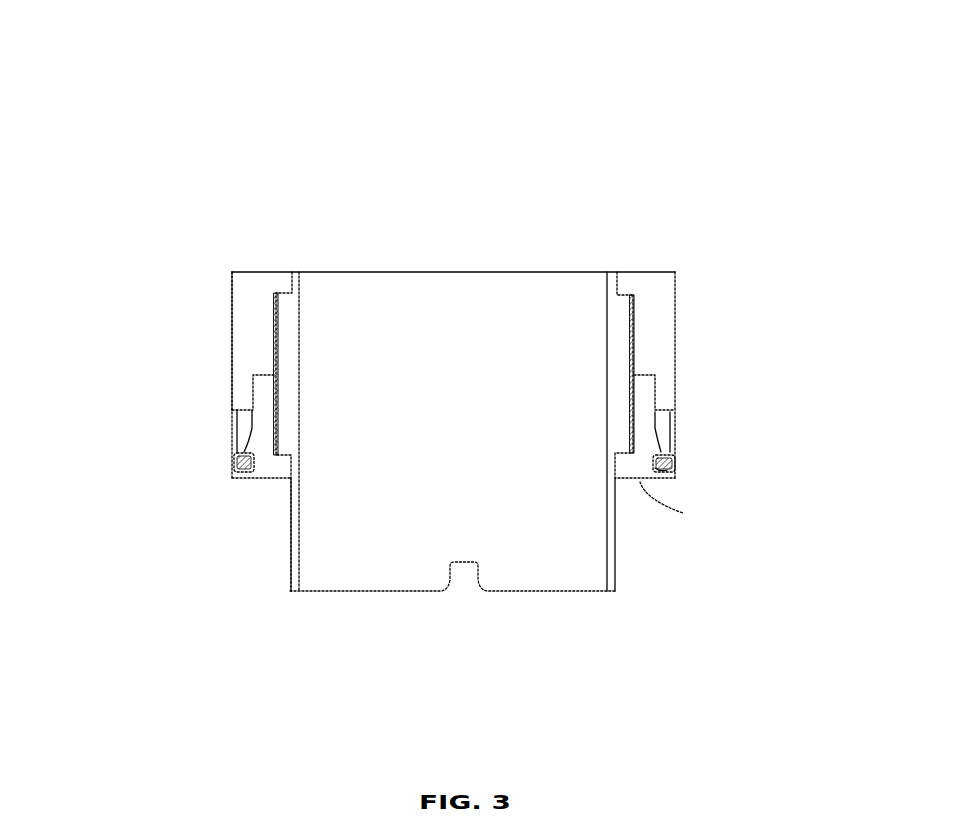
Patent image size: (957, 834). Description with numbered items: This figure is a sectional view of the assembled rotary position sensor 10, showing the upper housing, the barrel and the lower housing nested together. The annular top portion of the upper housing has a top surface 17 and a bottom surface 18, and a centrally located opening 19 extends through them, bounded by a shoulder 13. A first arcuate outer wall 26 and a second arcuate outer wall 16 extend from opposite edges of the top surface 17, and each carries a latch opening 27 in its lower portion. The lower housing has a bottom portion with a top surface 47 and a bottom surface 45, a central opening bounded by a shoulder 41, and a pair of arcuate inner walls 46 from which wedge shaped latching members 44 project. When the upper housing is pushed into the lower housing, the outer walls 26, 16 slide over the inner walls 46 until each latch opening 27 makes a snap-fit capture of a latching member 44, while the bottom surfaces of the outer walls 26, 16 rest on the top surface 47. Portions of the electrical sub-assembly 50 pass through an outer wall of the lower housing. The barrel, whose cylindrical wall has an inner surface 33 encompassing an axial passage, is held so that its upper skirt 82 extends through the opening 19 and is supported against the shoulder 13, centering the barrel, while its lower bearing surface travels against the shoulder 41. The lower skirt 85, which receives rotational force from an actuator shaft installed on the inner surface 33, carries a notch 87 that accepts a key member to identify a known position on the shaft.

The rotary position sensor 10 is at (375, 104).
The shoulder 13 is at (286, 283).
The second arcuate outer wall 16 is at (270, 268).
The top surface 17 is at (245, 270).
The bottom surface 18 is at (623, 295).
The opening 19 is at (478, 270).
The first arcuate outer wall 26 is at (240, 333).
The latch opening 27 is at (235, 420).
The inner surface 33 is at (607, 337).
The shoulder 41 is at (291, 473).
The latching member 44 is at (238, 457).
The bottom surface 45 is at (680, 504).
The inner walls 46 is at (260, 397).
The top surface 47 is at (665, 472).
The electrical sub-assembly 50 is at (271, 354).
The upper skirt 82 is at (619, 280).
The lower skirt 85 is at (288, 549).
The notch 87 is at (473, 580).